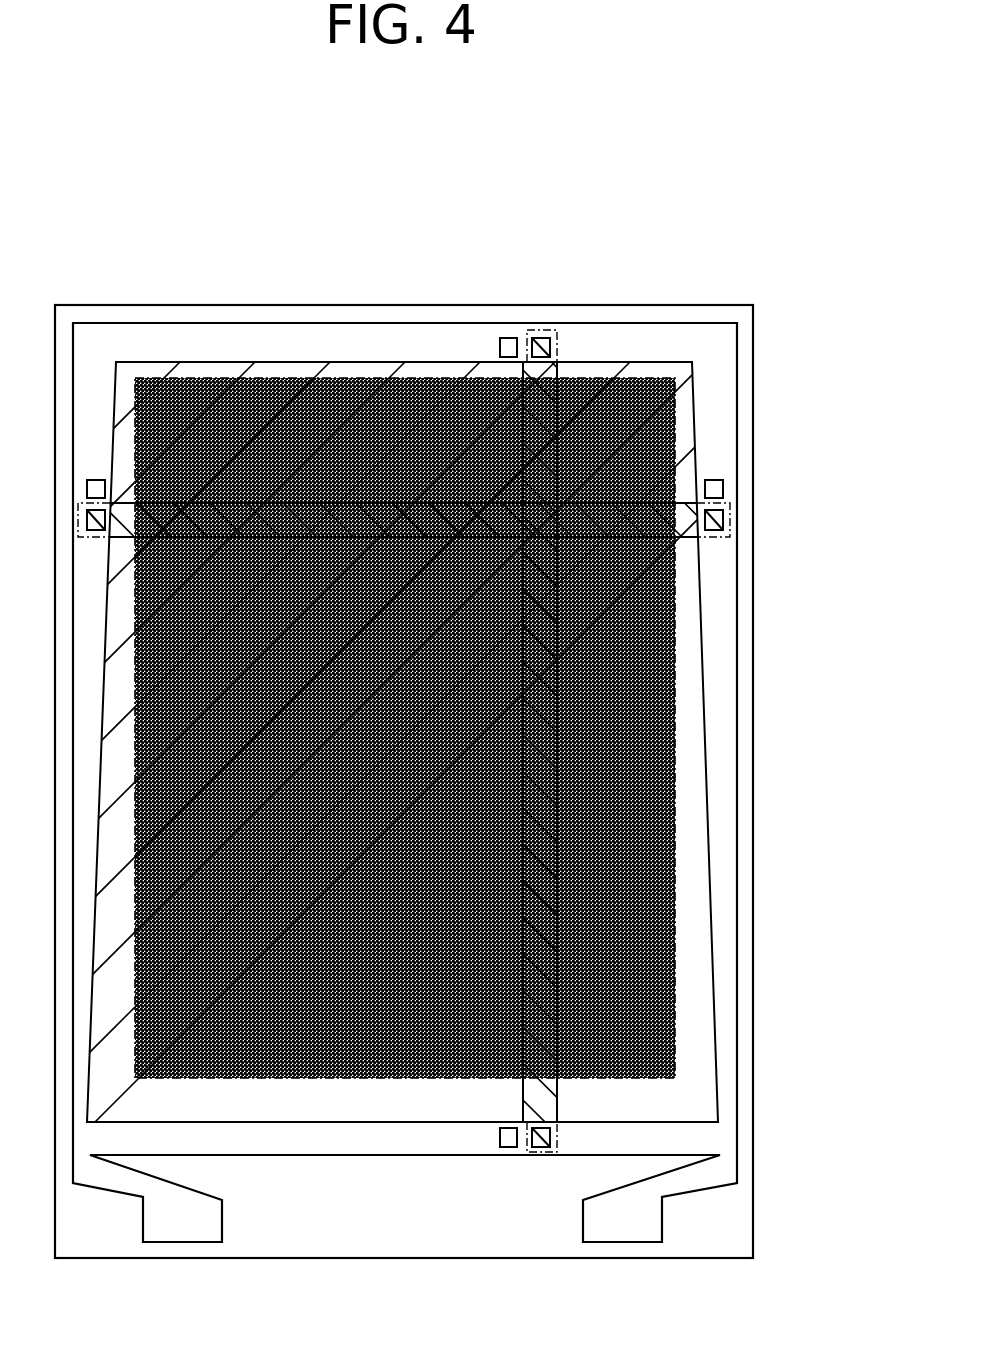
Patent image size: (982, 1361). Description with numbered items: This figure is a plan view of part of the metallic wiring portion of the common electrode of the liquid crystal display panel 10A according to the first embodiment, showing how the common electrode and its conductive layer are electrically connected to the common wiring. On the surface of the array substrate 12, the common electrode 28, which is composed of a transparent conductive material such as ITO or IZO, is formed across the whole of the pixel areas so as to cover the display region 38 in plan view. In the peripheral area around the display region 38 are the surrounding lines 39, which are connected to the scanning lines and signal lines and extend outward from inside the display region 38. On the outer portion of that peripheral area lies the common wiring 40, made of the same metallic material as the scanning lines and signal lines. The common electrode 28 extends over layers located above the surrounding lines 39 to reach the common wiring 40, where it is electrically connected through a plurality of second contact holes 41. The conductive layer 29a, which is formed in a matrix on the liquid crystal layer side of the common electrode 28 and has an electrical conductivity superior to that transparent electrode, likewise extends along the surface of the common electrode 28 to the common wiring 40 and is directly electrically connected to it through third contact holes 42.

The liquid crystal display panel 10A is at (212, 153).
The array substrate 12 is at (750, 372).
The common electrode 28 is at (620, 668).
The conductive layer 29a is at (605, 514).
The display region 38 is at (338, 948).
The surrounding lines 39 is at (432, 1107).
The common wiring 40 is at (718, 838).
The second contact holes 41 is at (508, 338).
The third contact holes 42 is at (541, 338).